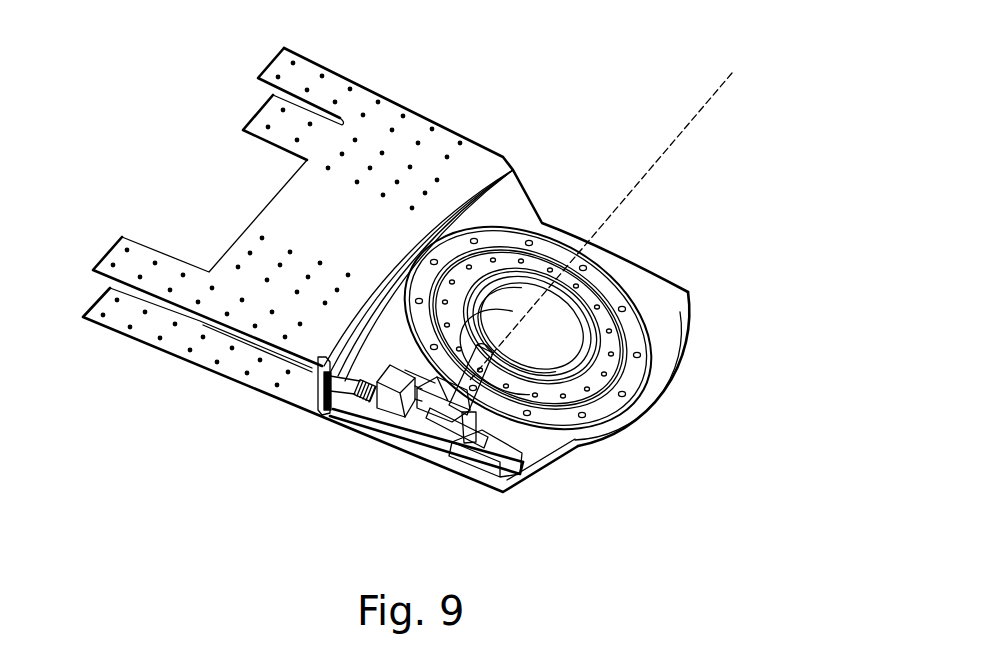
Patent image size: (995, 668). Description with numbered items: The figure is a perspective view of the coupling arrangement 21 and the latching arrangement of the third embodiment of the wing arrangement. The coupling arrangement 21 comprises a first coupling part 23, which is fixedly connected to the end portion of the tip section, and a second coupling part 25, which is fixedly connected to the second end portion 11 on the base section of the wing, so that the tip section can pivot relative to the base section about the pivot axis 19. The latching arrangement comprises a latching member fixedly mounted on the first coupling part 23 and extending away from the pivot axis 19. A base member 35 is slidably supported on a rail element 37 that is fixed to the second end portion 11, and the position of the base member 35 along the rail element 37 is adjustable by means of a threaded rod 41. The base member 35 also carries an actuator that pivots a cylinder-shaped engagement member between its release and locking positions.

The second end portion 11 is at (348, 233).
The pivot axis 19 is at (715, 92).
The coupling arrangement 21 is at (534, 300).
The first coupling part 23 is at (597, 297).
The second coupling part 25 is at (625, 388).
The base member 35 is at (423, 423).
The rail element 37 is at (477, 484).
The threaded rod 41 is at (342, 422).